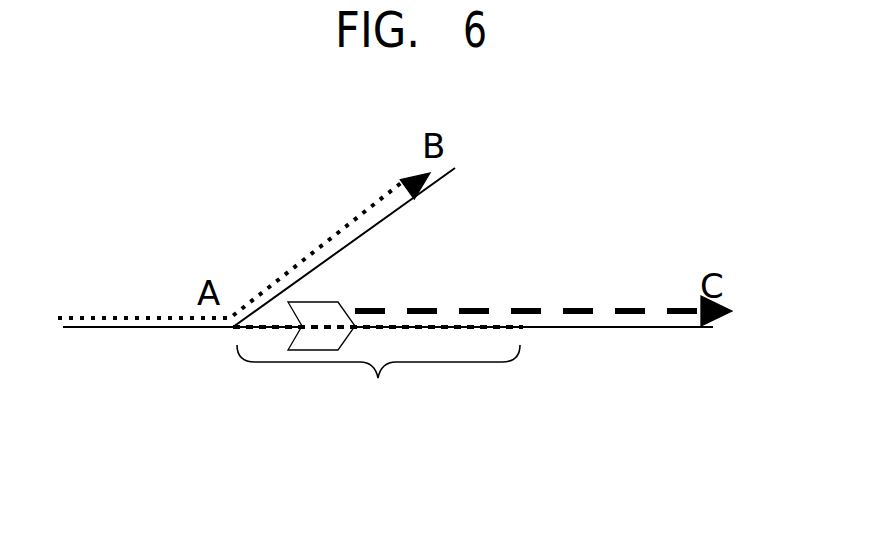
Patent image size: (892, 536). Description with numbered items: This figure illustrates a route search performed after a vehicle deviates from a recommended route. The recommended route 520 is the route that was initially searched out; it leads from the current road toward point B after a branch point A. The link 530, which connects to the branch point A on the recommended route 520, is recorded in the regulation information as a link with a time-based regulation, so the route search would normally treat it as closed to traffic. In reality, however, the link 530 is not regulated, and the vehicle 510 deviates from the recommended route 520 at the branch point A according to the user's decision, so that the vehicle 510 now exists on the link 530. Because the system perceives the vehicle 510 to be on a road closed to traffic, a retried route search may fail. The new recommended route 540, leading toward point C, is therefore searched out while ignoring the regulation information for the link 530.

The vehicle 510 is at (310, 353).
The recommended route 520 is at (292, 258).
The link 530 is at (378, 380).
The new recommended route 540 is at (595, 305).